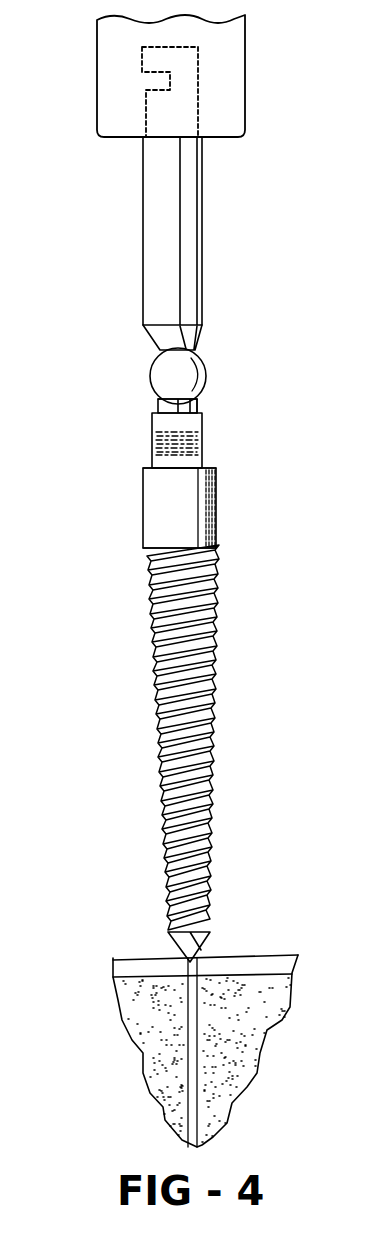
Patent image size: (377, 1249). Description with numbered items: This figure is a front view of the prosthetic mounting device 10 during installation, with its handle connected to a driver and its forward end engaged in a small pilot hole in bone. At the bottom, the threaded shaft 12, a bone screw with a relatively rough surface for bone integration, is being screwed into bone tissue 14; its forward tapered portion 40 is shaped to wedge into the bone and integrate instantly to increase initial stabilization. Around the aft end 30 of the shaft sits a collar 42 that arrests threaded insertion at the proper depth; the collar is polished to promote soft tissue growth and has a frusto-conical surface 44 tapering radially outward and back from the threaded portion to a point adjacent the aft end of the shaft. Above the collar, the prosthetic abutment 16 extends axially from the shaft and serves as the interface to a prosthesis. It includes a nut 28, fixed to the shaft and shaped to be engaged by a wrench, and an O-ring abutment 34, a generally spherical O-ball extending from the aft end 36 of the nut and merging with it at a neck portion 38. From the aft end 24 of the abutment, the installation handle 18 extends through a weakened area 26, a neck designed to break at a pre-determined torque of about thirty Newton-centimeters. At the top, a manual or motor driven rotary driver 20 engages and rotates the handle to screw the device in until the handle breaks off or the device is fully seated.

The prosthetic mounting device 10 is at (173, 488).
The threaded shaft 12 is at (200, 612).
The bone tissue 14 is at (243, 1035).
The prosthetic abutment 16 is at (214, 407).
The installation handle 18 is at (193, 178).
The rotary driver 20 is at (230, 100).
The aft end of the abutment 24 is at (193, 351).
The weakened area 26 is at (200, 328).
The nut 28 is at (196, 435).
The aft end of the threaded shaft 30 is at (143, 468).
The O-ring abutment 34 is at (207, 378).
The aft end of the nut 36 is at (158, 406).
The neck portion 38 is at (172, 398).
The tapered portion 40 is at (192, 865).
The collar 42 is at (205, 498).
The frusto-conical surface 44 is at (142, 509).